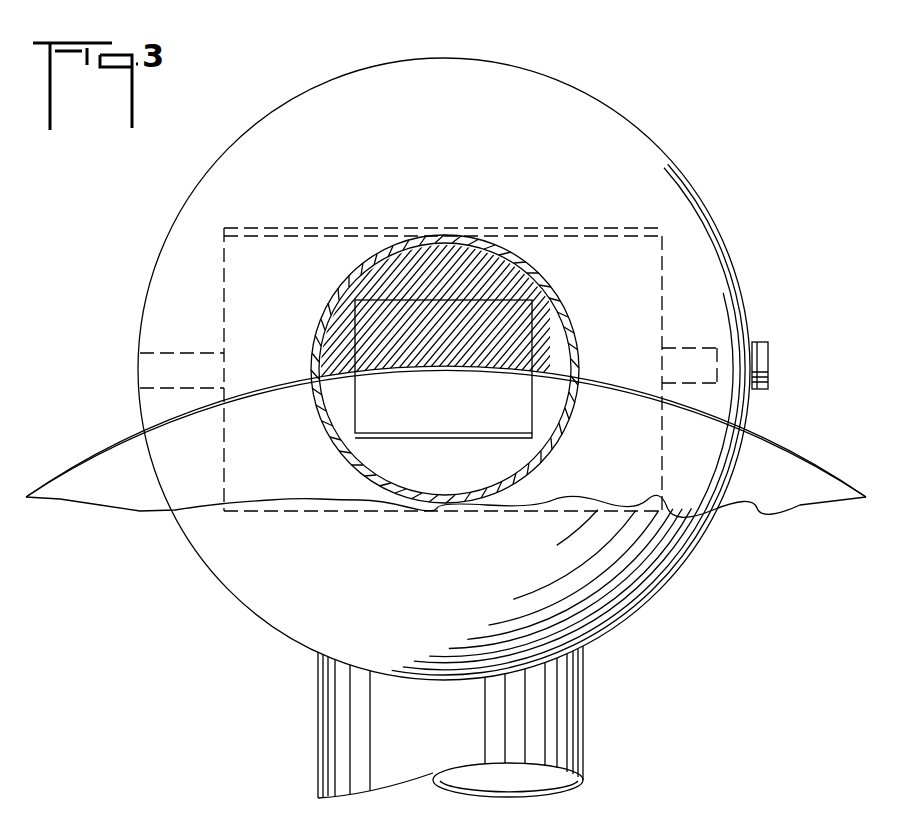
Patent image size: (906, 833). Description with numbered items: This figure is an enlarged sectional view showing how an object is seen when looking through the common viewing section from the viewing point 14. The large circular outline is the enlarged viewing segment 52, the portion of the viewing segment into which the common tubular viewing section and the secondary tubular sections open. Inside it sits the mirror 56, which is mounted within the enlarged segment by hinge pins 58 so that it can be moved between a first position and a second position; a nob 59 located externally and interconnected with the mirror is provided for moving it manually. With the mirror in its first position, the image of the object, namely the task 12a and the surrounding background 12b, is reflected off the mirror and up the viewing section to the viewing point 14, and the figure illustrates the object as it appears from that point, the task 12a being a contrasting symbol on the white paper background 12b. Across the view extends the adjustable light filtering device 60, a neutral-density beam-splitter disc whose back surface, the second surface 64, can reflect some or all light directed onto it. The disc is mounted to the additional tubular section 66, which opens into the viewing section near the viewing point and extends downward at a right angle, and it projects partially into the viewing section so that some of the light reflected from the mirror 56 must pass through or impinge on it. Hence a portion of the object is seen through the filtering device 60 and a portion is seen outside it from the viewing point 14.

The task 12a is at (397, 383).
The background 12b is at (515, 325).
The viewing point 14 is at (548, 447).
The enlarged viewing segment 52 is at (622, 128).
The mirror 56 is at (457, 255).
The hinge pins 58 is at (180, 350).
The nob 59 is at (768, 342).
The adjustable light filtering device 60 is at (800, 447).
The second surface 64 is at (100, 465).
The additional tubular section 66 is at (332, 728).